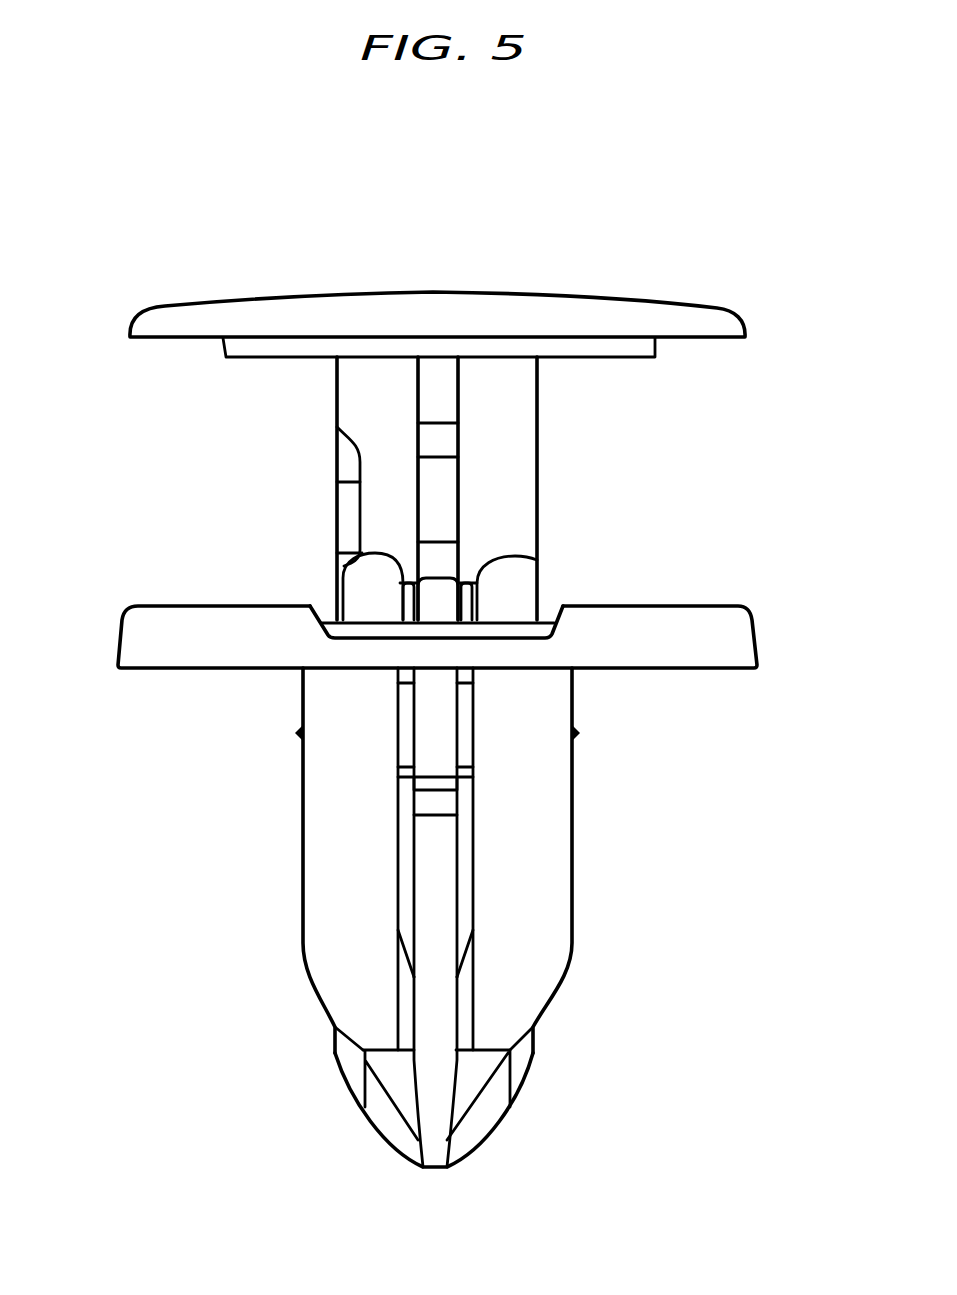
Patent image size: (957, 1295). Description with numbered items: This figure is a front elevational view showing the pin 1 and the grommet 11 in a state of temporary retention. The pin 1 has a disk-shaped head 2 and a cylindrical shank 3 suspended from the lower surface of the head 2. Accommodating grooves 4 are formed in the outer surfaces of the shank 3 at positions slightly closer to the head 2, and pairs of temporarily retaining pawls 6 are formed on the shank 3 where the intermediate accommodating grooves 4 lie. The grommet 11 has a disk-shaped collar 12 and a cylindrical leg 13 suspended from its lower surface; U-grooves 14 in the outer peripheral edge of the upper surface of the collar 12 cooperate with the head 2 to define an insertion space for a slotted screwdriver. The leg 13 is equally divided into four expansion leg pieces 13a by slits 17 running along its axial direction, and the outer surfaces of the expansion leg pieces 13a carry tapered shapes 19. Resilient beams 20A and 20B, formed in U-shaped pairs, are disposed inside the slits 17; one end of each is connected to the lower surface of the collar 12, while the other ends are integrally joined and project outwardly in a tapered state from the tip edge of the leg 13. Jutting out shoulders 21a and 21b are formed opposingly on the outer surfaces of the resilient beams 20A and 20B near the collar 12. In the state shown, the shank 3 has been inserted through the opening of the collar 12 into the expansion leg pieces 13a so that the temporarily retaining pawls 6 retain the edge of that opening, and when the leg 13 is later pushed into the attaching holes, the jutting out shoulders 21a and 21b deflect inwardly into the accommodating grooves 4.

The pin 1 is at (730, 293).
The head 2 is at (376, 304).
The shank 3 is at (337, 405).
The accommodating grooves 4 is at (350, 482).
The temporarily retaining pawls 6 is at (340, 553).
The grommet 11 is at (760, 593).
The collar 12 is at (170, 620).
The leg 13 is at (270, 845).
The expansion leg pieces 13a is at (313, 932).
The U-grooves 14 is at (388, 638).
The slits 17 is at (446, 863).
The tapered shapes 19 is at (553, 997).
The resilient beam 20A is at (350, 1057).
The resilient beam 20B is at (440, 1075).
The jutting out shoulder 21a is at (298, 733).
The jutting out shoulder 21b is at (448, 784).